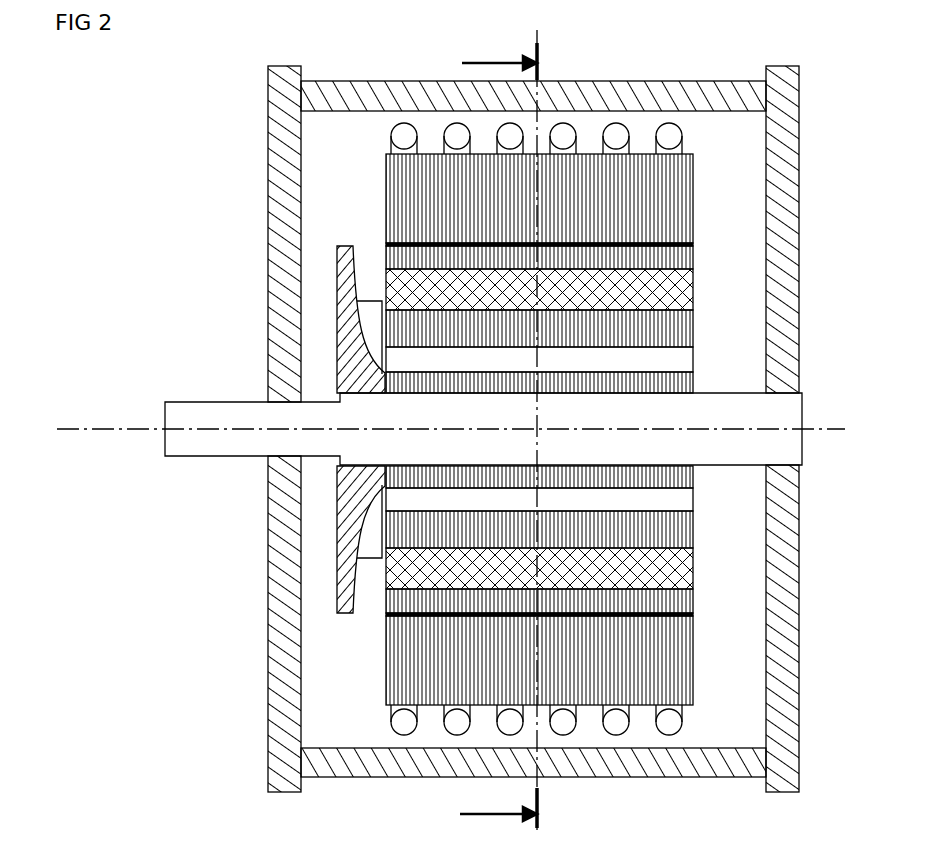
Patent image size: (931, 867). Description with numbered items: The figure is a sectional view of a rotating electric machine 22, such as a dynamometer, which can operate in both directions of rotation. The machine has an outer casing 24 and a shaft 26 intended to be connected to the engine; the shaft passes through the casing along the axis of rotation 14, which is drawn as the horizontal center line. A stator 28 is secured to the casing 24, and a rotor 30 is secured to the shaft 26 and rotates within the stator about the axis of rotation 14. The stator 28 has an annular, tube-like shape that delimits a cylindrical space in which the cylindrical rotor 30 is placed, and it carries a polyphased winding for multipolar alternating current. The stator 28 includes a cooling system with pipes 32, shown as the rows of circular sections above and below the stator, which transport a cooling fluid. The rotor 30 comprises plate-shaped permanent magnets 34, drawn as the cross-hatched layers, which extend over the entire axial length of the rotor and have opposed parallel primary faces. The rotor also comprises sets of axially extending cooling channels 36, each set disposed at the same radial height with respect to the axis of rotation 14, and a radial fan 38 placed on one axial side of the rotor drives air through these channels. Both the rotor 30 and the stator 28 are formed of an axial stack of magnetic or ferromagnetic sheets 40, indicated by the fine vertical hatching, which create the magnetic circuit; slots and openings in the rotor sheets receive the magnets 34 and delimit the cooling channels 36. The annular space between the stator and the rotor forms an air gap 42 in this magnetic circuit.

The axis of rotation 14 is at (124, 428).
The rotating electric machine 22 is at (186, 174).
The outer casing 24 is at (278, 690).
The shaft 26 is at (188, 416).
The stator 28 is at (643, 200).
The rotor 30 is at (650, 330).
The pipes 32 is at (405, 722).
The permanent magnets 34 is at (655, 290).
The cooling channels 36 is at (643, 498).
The radial fan 38 is at (347, 613).
The magnetic or ferromagnetic sheets 40 is at (512, 228).
The air gap 42 is at (693, 245).